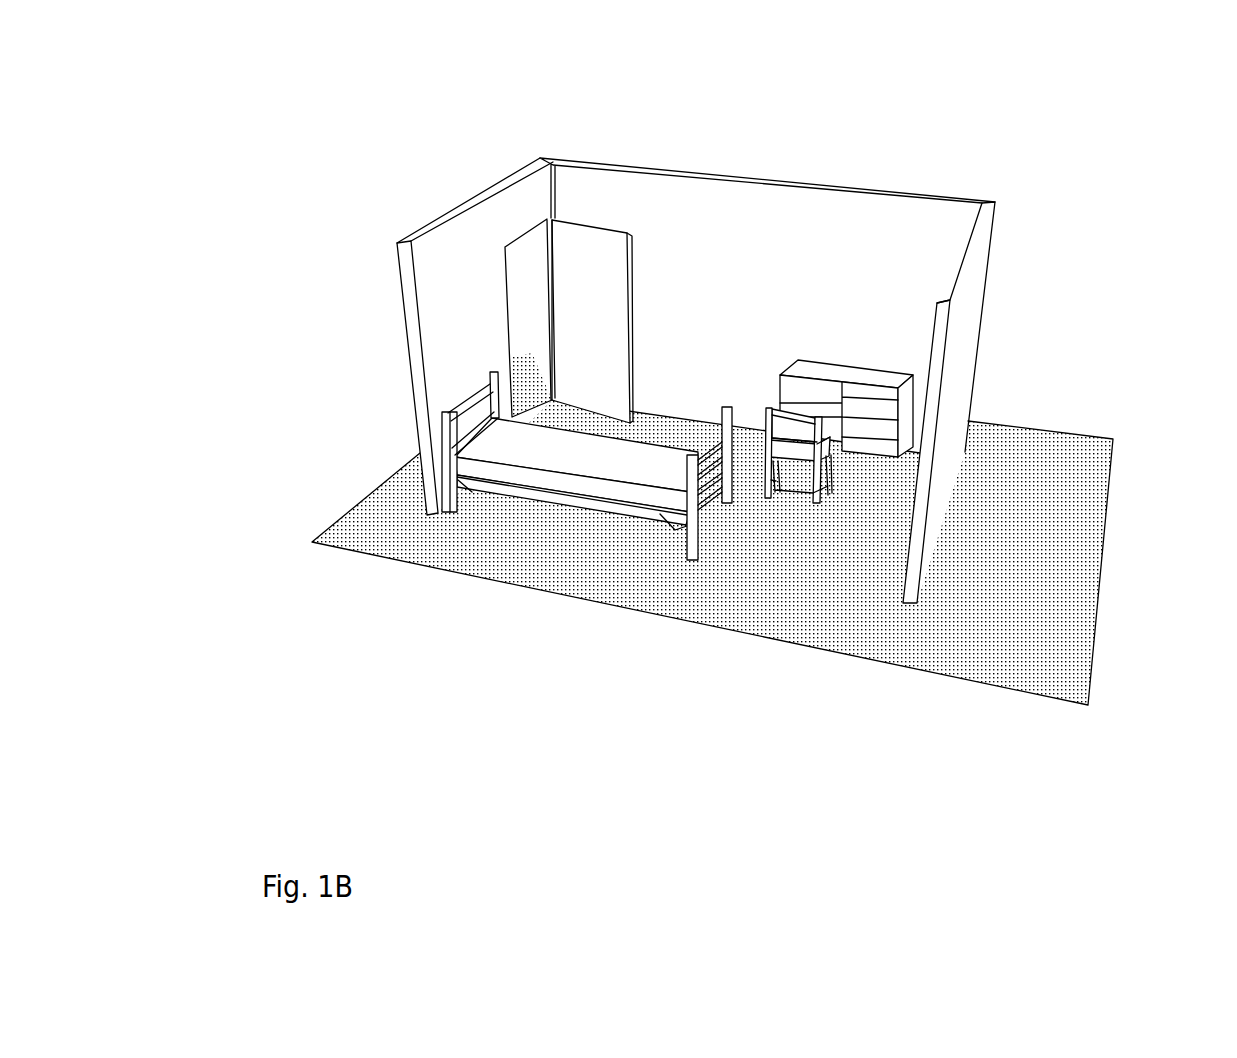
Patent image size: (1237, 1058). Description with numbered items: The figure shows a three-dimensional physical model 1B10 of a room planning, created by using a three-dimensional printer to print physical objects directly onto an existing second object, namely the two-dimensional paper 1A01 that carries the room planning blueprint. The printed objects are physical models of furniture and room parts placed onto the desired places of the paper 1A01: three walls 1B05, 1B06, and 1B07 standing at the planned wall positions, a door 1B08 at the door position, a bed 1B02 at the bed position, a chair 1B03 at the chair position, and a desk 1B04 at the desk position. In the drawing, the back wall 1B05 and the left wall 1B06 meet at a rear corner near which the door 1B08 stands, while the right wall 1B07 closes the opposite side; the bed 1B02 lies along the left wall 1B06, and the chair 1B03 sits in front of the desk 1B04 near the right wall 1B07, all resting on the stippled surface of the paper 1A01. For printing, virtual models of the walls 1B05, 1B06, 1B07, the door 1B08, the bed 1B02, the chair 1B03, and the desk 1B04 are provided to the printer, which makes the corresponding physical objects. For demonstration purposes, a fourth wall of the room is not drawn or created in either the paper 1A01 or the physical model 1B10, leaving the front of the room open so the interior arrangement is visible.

The 2D paper 1A01 is at (372, 568).
The bed 1B02 is at (531, 516).
The chair 1B03 is at (808, 516).
The desk 1B04 is at (876, 502).
The wall 1B05 is at (697, 220).
The wall 1B06 is at (393, 388).
The wall 1B07 is at (969, 407).
The door 1B08 is at (573, 296).
The 3D physical model 1B10 is at (708, 397).